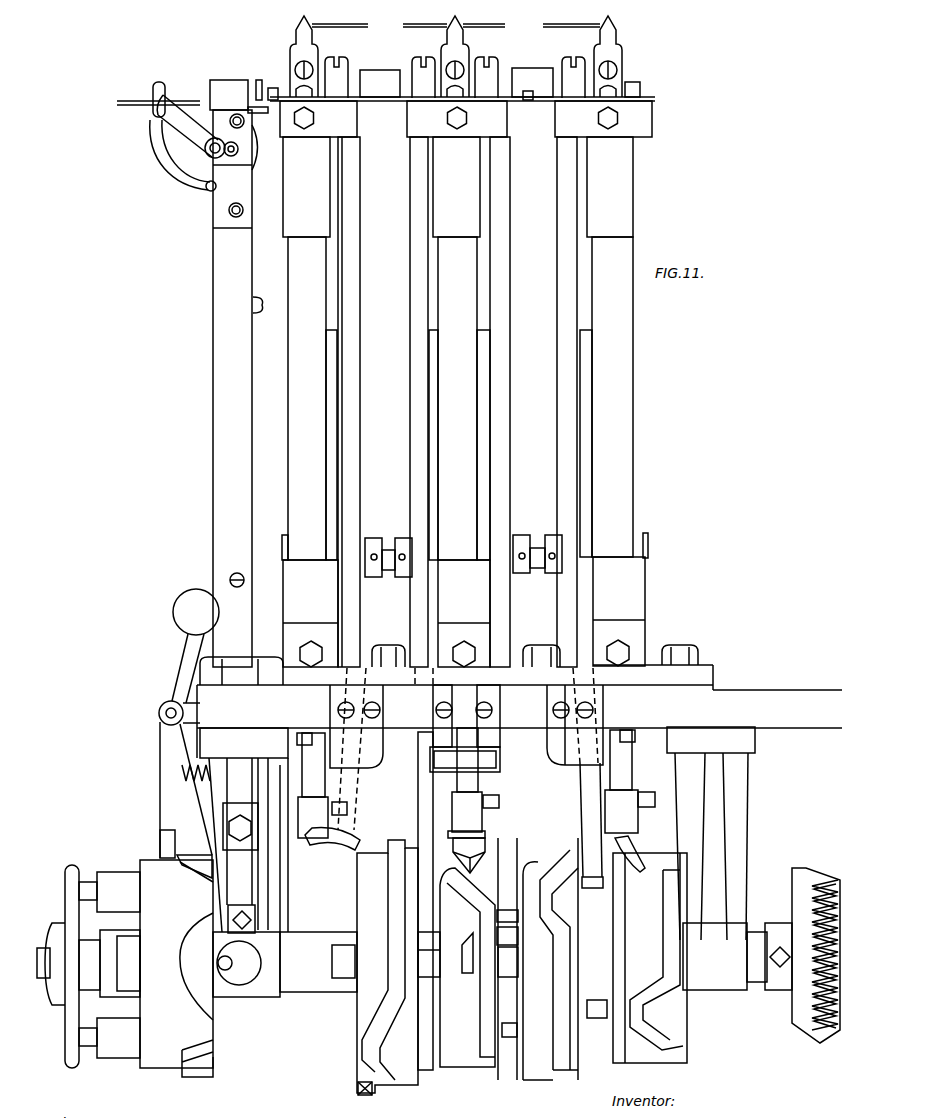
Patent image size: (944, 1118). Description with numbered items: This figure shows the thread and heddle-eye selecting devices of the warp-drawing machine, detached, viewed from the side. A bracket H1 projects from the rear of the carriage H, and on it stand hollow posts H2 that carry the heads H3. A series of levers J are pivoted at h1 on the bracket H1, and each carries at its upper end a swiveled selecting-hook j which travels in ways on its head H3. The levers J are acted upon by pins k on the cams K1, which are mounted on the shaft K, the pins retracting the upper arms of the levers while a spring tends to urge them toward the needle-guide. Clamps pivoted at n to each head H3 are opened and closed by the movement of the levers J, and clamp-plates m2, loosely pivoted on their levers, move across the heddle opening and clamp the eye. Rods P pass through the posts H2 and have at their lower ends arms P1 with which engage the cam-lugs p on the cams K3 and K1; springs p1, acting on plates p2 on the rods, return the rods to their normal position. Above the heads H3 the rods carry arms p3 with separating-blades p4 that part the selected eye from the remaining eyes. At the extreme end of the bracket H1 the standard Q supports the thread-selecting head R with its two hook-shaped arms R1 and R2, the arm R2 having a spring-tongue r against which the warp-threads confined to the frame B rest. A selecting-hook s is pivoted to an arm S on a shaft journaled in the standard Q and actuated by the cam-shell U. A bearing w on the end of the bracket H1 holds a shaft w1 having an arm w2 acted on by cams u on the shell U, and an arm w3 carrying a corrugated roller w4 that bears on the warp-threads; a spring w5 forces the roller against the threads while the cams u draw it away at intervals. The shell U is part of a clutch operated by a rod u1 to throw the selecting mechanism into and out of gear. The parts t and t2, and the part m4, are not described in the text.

The selecting-hook s is at (158, 95).
The spring-tongue r is at (164, 95).
The thread-selecting head R is at (181, 73).
The arm R2 is at (191, 126).
The arm R1 is at (183, 155).
The pin t2 is at (231, 91).
The pin t is at (273, 83).
The standard Q is at (248, 506).
The frame B is at (258, 303).
The arm p3 is at (456, 48).
The separating-blade p4 is at (456, 491).
The pivot n is at (455, 67).
The clamp-plate m2 is at (456, 82).
The block m4 is at (578, 103).
The head H3 is at (466, 119).
The carriage H is at (467, 115).
The hollow post H2 is at (465, 402).
The lever J is at (457, 402).
The selecting-hook j is at (334, 432).
The pivot h1 is at (456, 556).
The corrugated roller w4 is at (196, 612).
The arm w3 is at (172, 668).
The bearing w is at (159, 714).
The shaft w1 is at (191, 725).
The arm w2 is at (177, 790).
The spring w5 is at (196, 784).
The bracket H1 is at (519, 718).
The plate p2 is at (466, 762).
The spring p1 is at (470, 778).
The rod P is at (306, 786).
The arm P1 is at (484, 842).
The cam u is at (216, 962).
The rod u1 is at (88, 956).
The cam-shell U is at (129, 968).
The arm S is at (240, 845).
The shaft K is at (536, 872).
The pin k is at (528, 1030).
The cam K1 is at (467, 965).
The cam K3 is at (650, 958).
The cam-lug p is at (358, 1088).